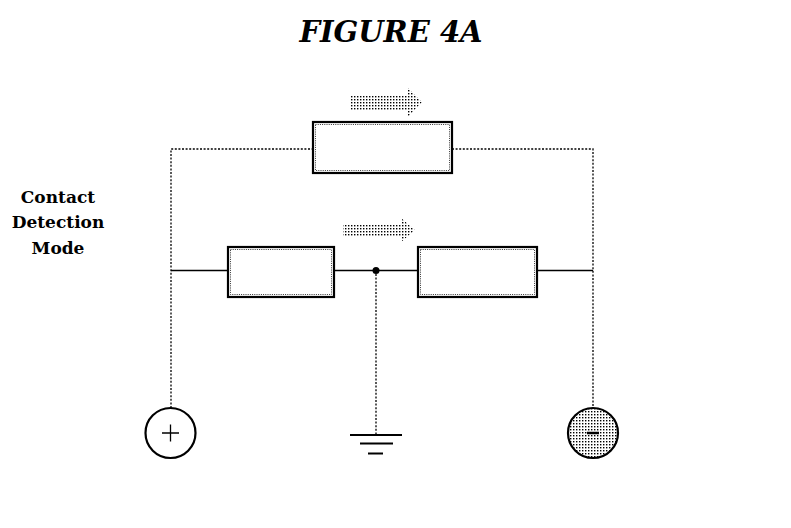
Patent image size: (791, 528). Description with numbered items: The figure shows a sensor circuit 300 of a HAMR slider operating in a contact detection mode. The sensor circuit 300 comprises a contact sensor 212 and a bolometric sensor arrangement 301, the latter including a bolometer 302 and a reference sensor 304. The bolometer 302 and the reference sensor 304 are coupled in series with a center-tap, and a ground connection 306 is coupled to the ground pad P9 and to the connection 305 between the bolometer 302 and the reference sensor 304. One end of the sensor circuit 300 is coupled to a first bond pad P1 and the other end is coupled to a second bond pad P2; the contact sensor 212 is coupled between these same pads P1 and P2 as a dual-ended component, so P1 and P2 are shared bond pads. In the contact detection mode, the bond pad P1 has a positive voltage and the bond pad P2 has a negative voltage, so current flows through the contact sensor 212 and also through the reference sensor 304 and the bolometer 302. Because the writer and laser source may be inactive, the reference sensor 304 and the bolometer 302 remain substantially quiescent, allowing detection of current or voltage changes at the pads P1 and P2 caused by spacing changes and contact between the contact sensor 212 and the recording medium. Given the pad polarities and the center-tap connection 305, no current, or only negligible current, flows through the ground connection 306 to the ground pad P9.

The sensor circuit 300 is at (157, 120).
The bolometric sensor arrangement 301 is at (619, 229).
The contact sensor 212 is at (330, 122).
The reference sensor 304 is at (278, 247).
The bolometer 302 is at (478, 247).
The connection 305 is at (378, 274).
The ground connection 306 is at (376, 367).
The first bond pad P1 is at (196, 434).
The second bond pad P2 is at (567, 432).
The ground pad P9 is at (360, 444).